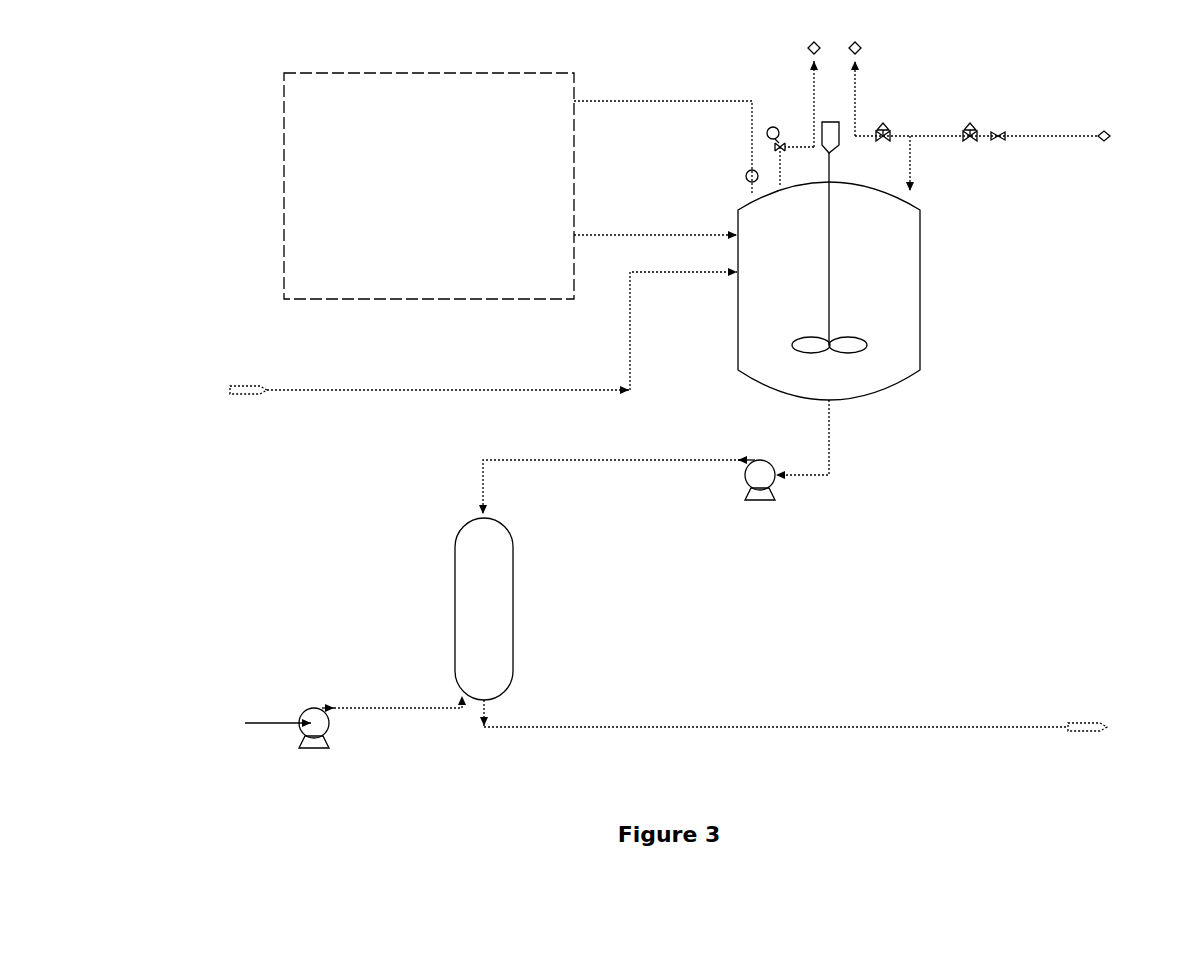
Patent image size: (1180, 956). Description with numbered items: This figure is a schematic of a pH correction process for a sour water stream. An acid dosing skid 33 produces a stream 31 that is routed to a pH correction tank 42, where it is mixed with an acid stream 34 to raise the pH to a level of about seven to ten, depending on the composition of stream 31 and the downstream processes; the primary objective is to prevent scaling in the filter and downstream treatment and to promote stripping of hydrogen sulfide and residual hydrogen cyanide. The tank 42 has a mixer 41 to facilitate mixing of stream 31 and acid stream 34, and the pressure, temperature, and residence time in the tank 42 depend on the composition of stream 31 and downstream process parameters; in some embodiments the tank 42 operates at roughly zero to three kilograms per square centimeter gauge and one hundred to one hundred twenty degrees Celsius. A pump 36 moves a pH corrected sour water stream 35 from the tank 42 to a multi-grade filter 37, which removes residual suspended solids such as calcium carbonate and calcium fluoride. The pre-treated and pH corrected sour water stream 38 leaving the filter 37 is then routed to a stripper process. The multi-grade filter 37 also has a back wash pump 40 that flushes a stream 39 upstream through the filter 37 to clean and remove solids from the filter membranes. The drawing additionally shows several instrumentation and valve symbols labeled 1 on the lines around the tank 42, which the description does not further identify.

The instrumentation and control valves 1 is at (808, 38).
The stream 31 is at (459, 337).
The acid dosing skid 33 is at (405, 176).
The acid stream 34 is at (655, 219).
The pH corrected sour water stream 35 is at (678, 457).
The pump 36 is at (753, 543).
The multi-grade filter 37 is at (471, 621).
The pre-treated and pH corrected sour water stream 38 is at (821, 715).
The stream 39 is at (256, 720).
The back wash pump 40 is at (300, 784).
The mixer 41 is at (819, 109).
The pH correction tank 42 is at (860, 278).